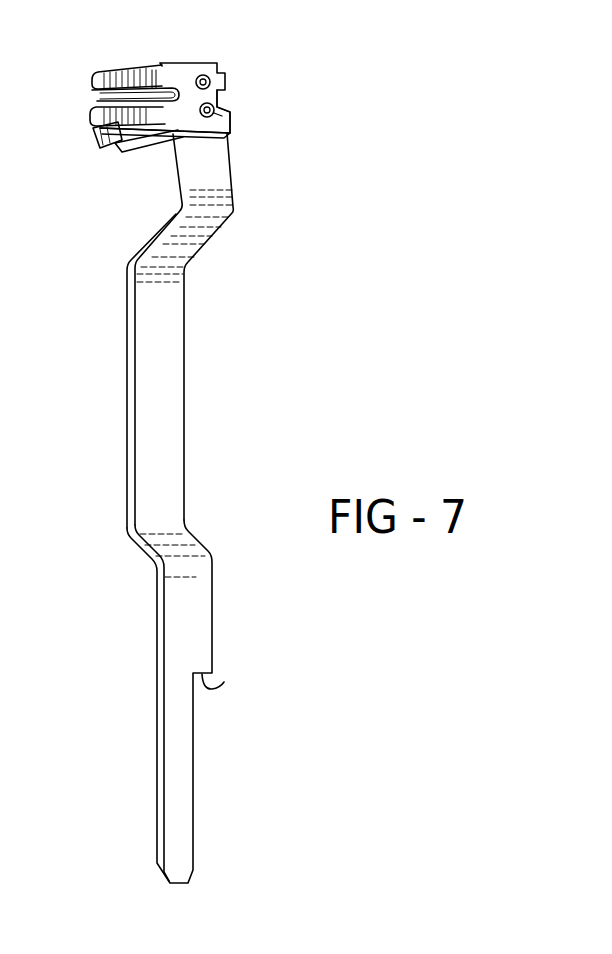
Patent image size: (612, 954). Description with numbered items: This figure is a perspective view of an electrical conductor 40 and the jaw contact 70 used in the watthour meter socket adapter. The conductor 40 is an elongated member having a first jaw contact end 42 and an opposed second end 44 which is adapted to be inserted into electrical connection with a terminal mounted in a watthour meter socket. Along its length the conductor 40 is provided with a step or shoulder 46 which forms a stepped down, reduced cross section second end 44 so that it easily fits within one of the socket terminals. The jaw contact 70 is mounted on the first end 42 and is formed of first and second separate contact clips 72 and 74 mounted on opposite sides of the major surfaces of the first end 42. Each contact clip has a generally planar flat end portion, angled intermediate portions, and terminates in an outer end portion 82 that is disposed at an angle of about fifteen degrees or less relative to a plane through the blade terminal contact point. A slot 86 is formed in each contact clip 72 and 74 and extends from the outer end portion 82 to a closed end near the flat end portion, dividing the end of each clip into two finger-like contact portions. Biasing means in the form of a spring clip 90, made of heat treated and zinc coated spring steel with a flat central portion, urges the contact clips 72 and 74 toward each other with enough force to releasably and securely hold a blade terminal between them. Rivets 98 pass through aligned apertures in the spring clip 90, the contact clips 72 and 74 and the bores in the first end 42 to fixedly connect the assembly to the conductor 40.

The conductor 40 is at (201, 508).
The first jaw contact end 42 is at (218, 182).
The second end 44 is at (160, 768).
The step or shoulder 46 is at (224, 682).
The jaw contact 70 is at (165, 112).
The first contact clip 72 is at (115, 73).
The second contact clip 74 is at (127, 150).
The outer end portion 82 is at (93, 138).
The slot 86 is at (94, 72).
The first spring clip 90 is at (190, 70).
The rivet 98 is at (220, 118).